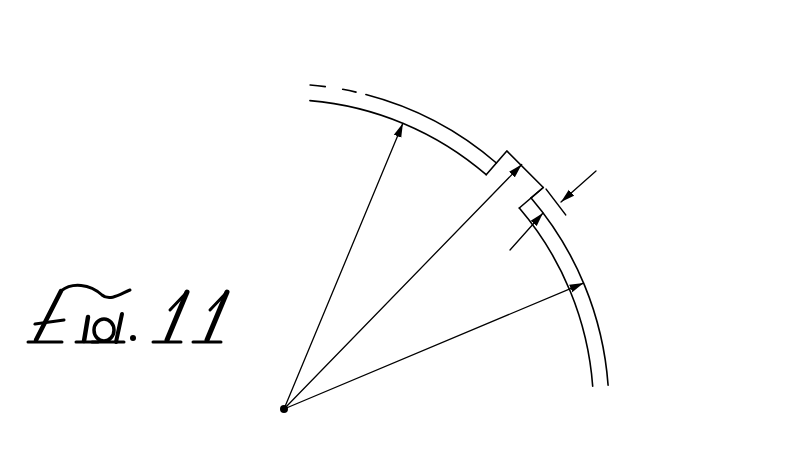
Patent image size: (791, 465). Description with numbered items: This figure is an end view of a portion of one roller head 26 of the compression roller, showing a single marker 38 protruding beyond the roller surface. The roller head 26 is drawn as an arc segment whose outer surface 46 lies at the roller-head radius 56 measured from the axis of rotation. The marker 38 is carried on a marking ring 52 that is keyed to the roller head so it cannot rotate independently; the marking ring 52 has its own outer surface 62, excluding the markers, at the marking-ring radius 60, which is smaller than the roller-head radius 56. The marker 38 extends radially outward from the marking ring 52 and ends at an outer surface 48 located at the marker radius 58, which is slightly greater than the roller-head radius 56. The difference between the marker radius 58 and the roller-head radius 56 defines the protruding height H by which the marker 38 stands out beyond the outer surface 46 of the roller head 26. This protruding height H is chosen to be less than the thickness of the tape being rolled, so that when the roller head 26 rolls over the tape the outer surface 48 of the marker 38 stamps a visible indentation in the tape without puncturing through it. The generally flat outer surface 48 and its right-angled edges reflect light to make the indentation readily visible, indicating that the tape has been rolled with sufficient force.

The roller head 26 is at (611, 350).
The marker 38 is at (538, 164).
The outer surface of the roller head 46 is at (598, 317).
The outer surface of the marker 48 is at (518, 160).
The marking ring 52 is at (333, 99).
The outer surface of the marking ring 62 is at (359, 110).
The roller-head radius 56 is at (406, 361).
The marker radius 58 is at (449, 241).
The marking-ring radius 60 is at (355, 234).
The protruding height H is at (561, 201).